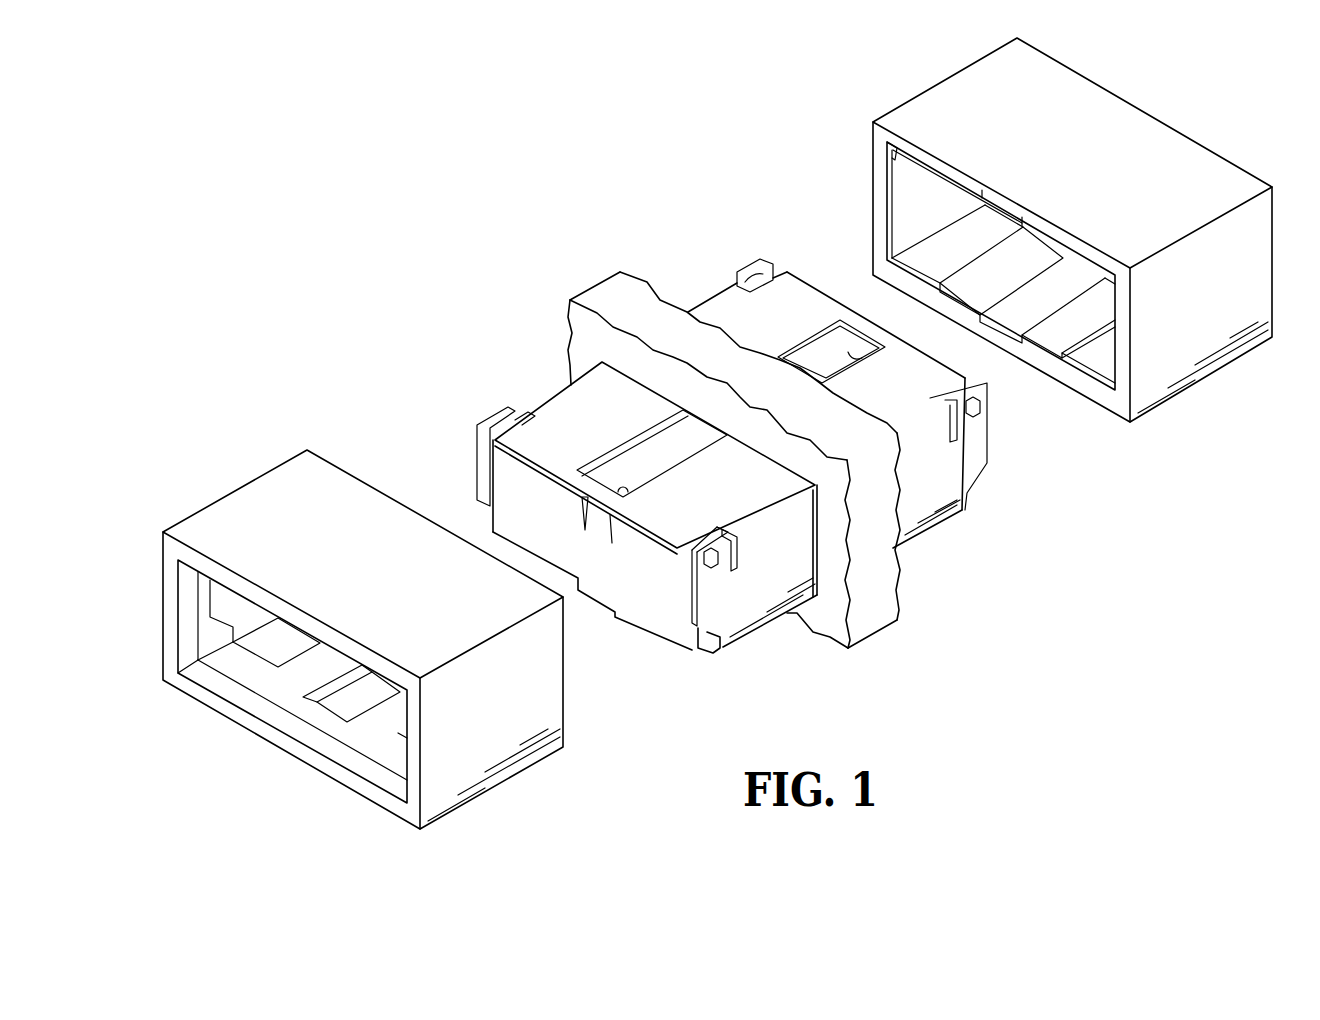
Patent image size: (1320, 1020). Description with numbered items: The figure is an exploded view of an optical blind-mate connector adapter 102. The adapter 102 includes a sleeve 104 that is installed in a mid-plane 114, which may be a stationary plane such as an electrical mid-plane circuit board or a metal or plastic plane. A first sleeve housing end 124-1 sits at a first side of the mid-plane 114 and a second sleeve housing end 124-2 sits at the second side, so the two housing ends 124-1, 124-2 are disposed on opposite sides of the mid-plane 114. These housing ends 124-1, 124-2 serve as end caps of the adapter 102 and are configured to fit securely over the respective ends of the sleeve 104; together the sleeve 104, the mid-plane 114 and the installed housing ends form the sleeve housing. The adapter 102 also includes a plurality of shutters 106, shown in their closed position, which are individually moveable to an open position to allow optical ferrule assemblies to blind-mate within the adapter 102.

The optical blind-mate connector adapter 102 is at (498, 215).
The sleeve 104 is at (545, 381).
The shutters 106 is at (658, 598).
The mid-plane 114 is at (880, 637).
The first sleeve housing end 124-1 is at (233, 491).
The second sleeve housing end 124-2 is at (940, 81).